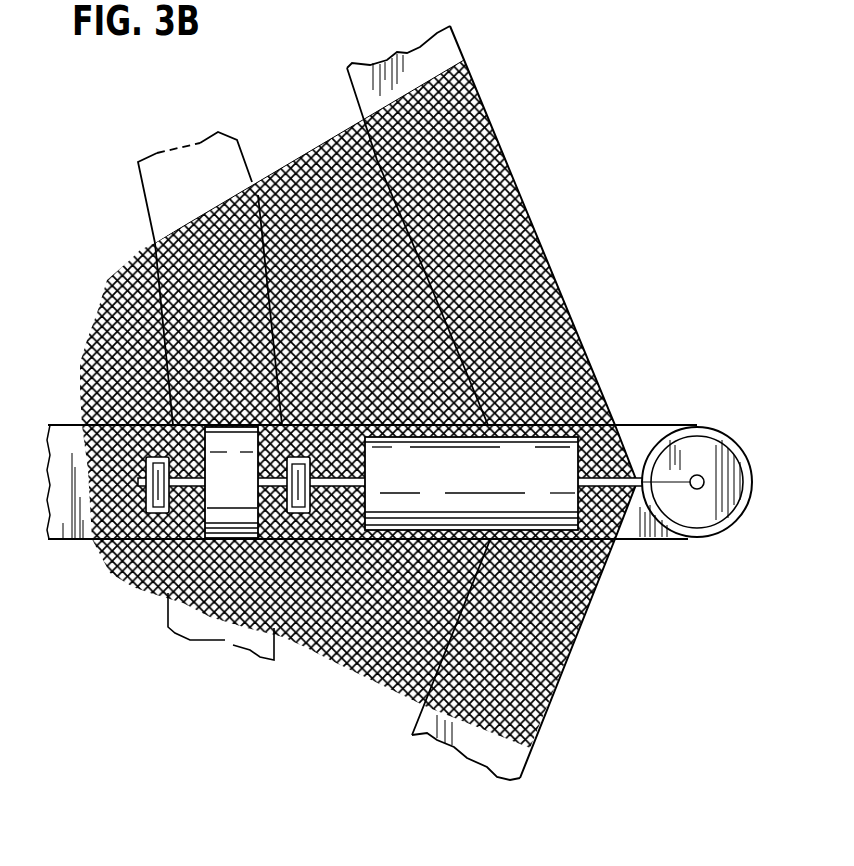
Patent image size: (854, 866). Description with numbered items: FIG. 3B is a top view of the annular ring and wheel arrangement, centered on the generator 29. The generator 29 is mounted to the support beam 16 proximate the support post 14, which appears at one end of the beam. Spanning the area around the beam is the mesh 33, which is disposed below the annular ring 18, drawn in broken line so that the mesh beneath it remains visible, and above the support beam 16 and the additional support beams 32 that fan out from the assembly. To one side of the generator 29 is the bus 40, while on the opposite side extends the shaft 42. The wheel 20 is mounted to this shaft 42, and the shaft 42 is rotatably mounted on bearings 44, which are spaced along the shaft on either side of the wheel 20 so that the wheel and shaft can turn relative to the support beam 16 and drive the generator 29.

The support post 14 is at (705, 457).
The support beam 16 is at (56, 516).
The annular ring 18 is at (190, 171).
The wheel 20 is at (218, 522).
The generator 29 is at (538, 457).
The support beams 32 is at (495, 403).
The mesh 33 is at (231, 255).
The bus 40 is at (673, 433).
The shaft 42 is at (188, 497).
The bearings 44 is at (108, 430).